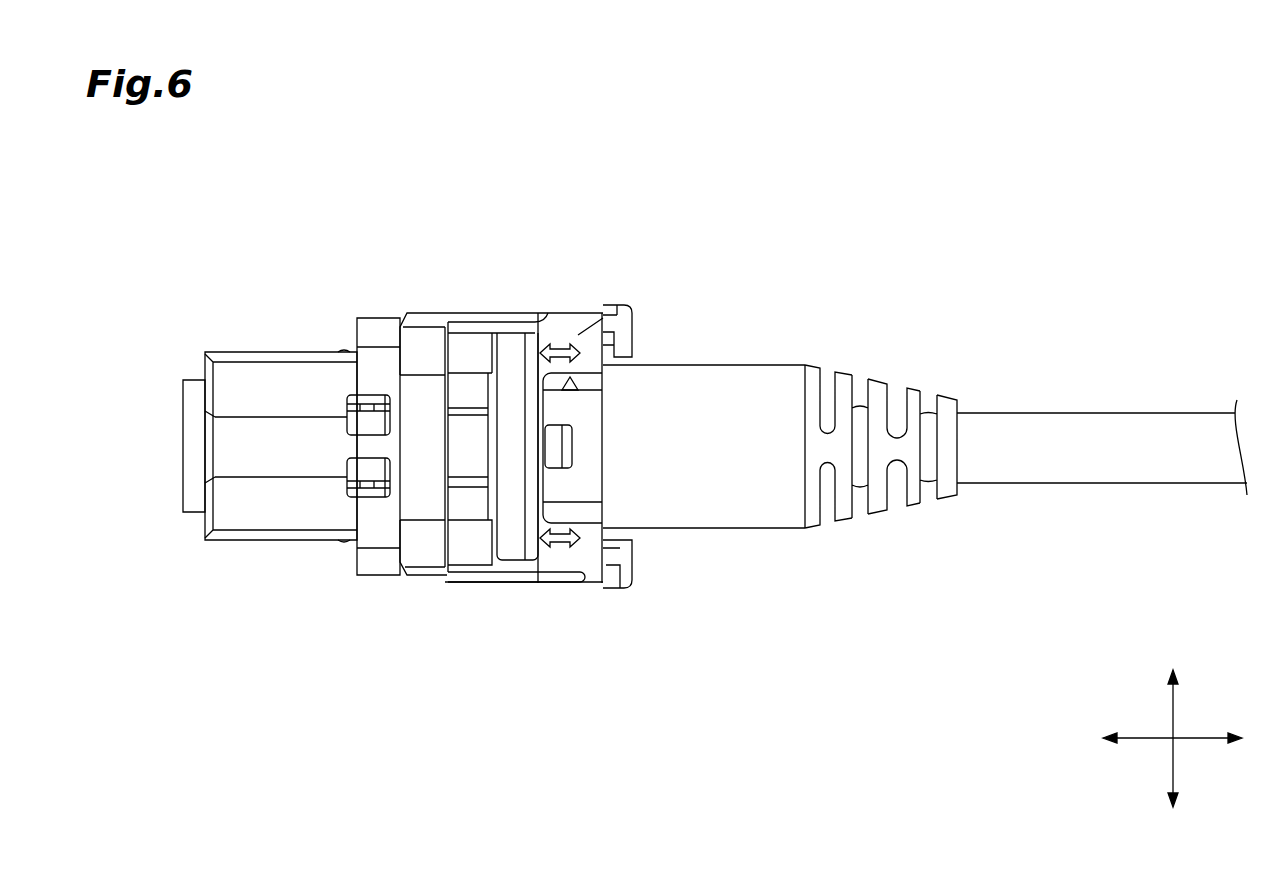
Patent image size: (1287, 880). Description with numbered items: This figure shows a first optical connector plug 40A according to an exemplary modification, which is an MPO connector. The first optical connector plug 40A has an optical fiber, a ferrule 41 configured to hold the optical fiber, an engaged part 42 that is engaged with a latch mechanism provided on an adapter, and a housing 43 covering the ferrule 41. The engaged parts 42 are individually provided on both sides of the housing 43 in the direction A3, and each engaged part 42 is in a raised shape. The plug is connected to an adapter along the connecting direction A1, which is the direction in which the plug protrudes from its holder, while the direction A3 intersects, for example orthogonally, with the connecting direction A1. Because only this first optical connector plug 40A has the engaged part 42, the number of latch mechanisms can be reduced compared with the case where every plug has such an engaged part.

The first optical connector plug 40A is at (430, 266).
The ferrule 41 is at (190, 410).
The engaged part 42 is at (348, 351).
The housing 43 is at (245, 514).
The connecting direction A1 is at (1147, 741).
The direction A3 is at (1176, 712).